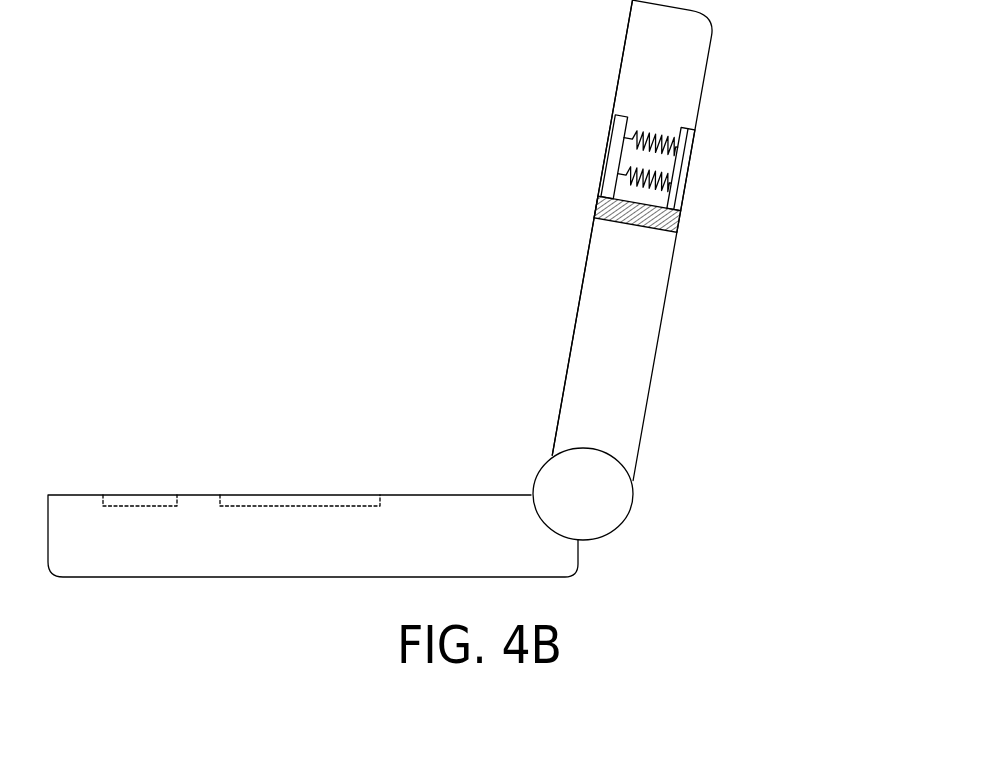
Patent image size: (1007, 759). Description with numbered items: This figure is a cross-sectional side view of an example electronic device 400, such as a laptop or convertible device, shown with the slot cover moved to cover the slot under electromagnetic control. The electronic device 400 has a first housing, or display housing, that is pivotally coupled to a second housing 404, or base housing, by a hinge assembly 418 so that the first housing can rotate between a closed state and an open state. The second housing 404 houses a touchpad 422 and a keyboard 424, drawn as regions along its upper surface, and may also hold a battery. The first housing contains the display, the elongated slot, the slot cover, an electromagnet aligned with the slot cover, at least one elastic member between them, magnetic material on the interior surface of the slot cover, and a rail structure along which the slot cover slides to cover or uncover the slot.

The electronic device 400 is at (411, 320).
The second housing 404 is at (307, 579).
The hinge assembly 418 is at (622, 511).
The touchpad 422 is at (137, 495).
The keyboard 424 is at (262, 495).